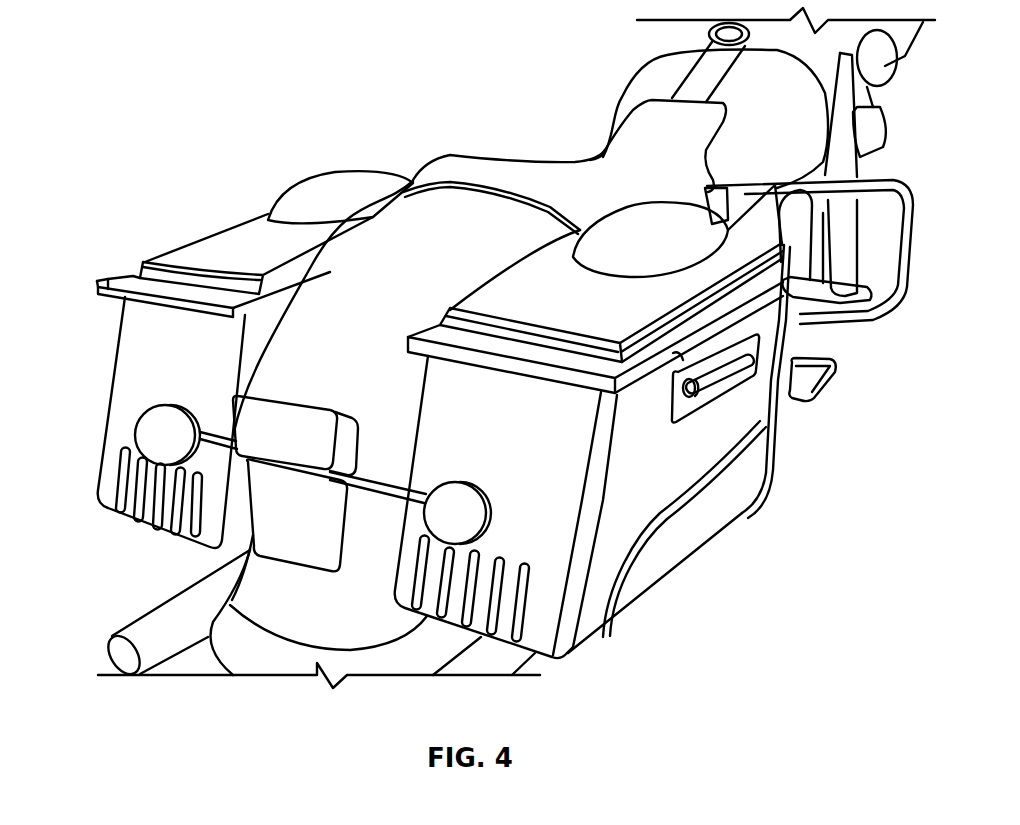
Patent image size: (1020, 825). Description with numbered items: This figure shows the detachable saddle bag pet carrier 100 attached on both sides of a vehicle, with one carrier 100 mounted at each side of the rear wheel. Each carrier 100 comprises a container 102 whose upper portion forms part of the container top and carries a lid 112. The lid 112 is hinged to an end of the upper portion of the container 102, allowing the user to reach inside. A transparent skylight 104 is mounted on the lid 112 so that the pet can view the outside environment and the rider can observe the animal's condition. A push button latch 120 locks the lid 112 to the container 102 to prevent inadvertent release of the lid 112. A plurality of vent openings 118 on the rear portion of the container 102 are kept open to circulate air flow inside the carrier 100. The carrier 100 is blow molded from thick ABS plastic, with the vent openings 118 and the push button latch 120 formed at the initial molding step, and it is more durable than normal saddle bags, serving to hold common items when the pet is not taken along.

The detachable saddle bag pet carrier 100 is at (118, 362).
The container 102 is at (650, 482).
The transparent skylight 104 is at (277, 197).
The lid 112 is at (97, 288).
The vent openings 118 is at (118, 472).
The push button latch 120 is at (695, 393).